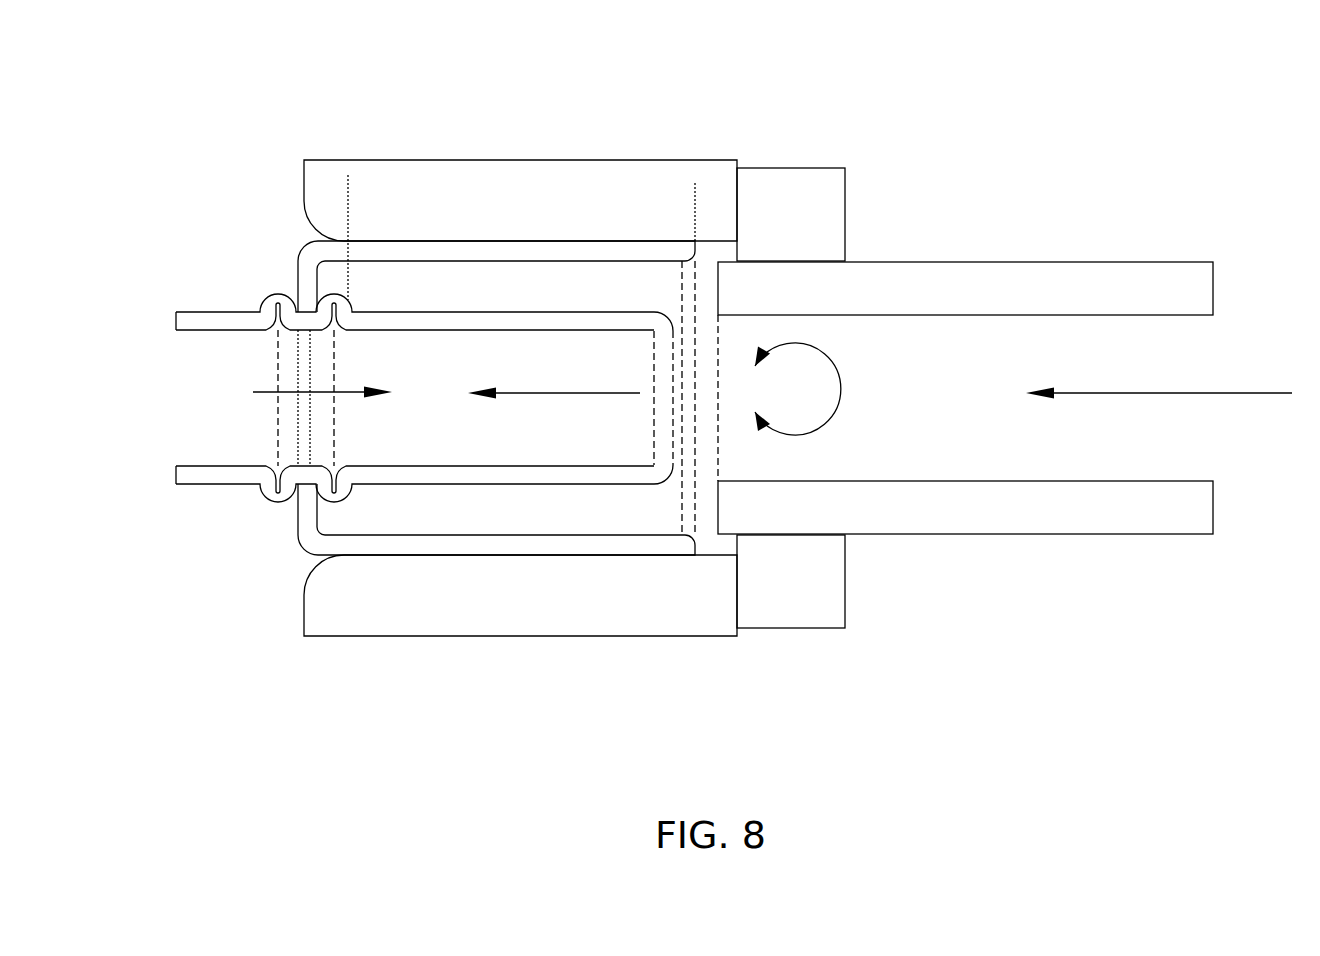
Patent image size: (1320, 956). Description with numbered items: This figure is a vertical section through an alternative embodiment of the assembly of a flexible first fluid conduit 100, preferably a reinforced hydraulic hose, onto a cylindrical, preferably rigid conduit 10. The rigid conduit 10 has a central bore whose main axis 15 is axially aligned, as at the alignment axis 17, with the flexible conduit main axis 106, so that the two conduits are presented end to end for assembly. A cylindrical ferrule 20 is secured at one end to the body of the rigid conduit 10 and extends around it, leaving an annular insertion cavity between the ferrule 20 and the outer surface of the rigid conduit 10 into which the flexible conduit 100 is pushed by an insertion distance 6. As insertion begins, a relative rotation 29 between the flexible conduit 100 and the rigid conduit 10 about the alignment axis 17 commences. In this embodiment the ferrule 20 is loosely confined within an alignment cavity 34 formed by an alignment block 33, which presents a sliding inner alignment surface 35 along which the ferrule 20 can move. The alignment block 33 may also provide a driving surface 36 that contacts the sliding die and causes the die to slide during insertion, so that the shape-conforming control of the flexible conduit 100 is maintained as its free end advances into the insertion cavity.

The insertion distance 6 is at (695, 183).
The rigid conduit 10 is at (258, 310).
The main axis 15 is at (293, 392).
The alignment axis 17 is at (558, 393).
The ferrule 20 is at (428, 261).
The relative rotation 29 is at (838, 377).
The alignment block 33 is at (562, 170).
The alignment cavity 34 is at (712, 557).
The sliding inner alignment surface 35 is at (592, 241).
The driving surface 36 is at (738, 190).
The flexible first fluid conduit 100 is at (998, 288).
The flexible conduit main axis 106 is at (1207, 393).